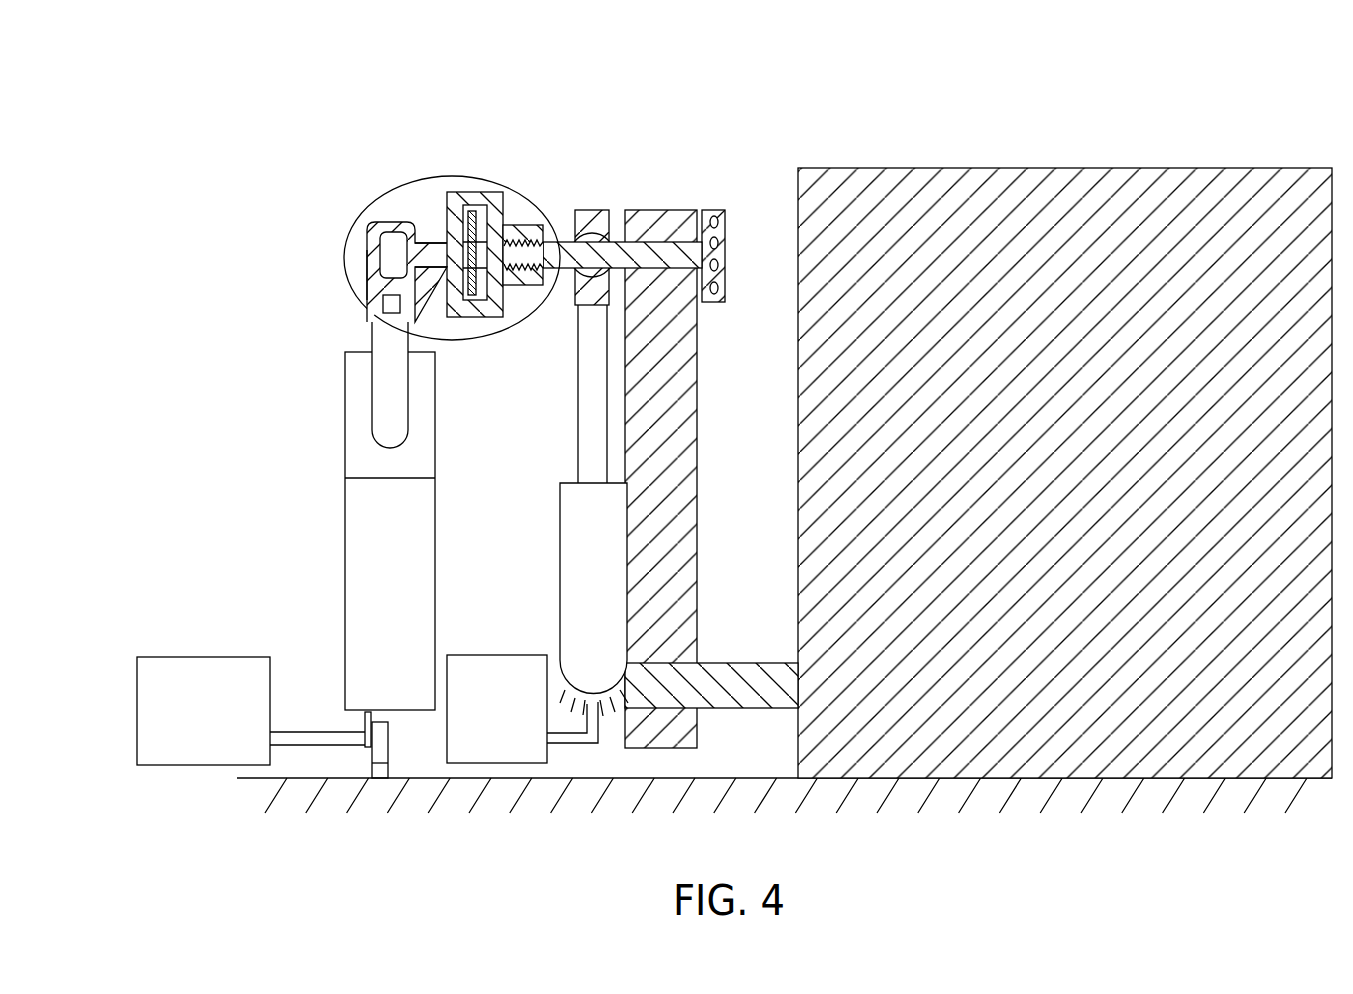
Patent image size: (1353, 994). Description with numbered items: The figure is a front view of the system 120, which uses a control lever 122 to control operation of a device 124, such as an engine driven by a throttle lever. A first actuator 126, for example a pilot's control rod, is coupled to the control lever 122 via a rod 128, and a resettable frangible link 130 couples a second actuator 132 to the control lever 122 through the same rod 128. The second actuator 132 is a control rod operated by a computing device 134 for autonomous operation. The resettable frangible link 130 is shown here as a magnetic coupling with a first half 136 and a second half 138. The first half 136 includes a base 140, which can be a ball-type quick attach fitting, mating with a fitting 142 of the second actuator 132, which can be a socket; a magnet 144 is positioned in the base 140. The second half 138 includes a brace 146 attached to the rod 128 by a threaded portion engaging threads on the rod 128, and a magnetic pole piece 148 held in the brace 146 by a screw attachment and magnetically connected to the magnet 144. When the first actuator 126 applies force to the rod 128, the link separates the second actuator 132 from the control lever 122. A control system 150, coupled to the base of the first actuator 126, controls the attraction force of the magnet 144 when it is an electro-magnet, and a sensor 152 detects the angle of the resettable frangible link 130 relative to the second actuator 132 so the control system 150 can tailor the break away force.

The system 120 is at (252, 113).
The control lever 122 is at (707, 489).
The device 124 is at (919, 163).
The first actuator 126 is at (556, 500).
The rod 128 is at (650, 242).
The resettable frangible link 130 is at (438, 233).
The second actuator 132 is at (343, 437).
The computing device 134 is at (201, 656).
The first half 136 is at (361, 233).
The second half 138 is at (552, 206).
The base 140 is at (402, 256).
The fitting 142 is at (367, 268).
The magnet 144 is at (462, 224).
The brace 146 is at (543, 226).
The magnetic pole piece 148 is at (481, 303).
The control system 150 is at (496, 654).
The sensor 152 is at (380, 306).